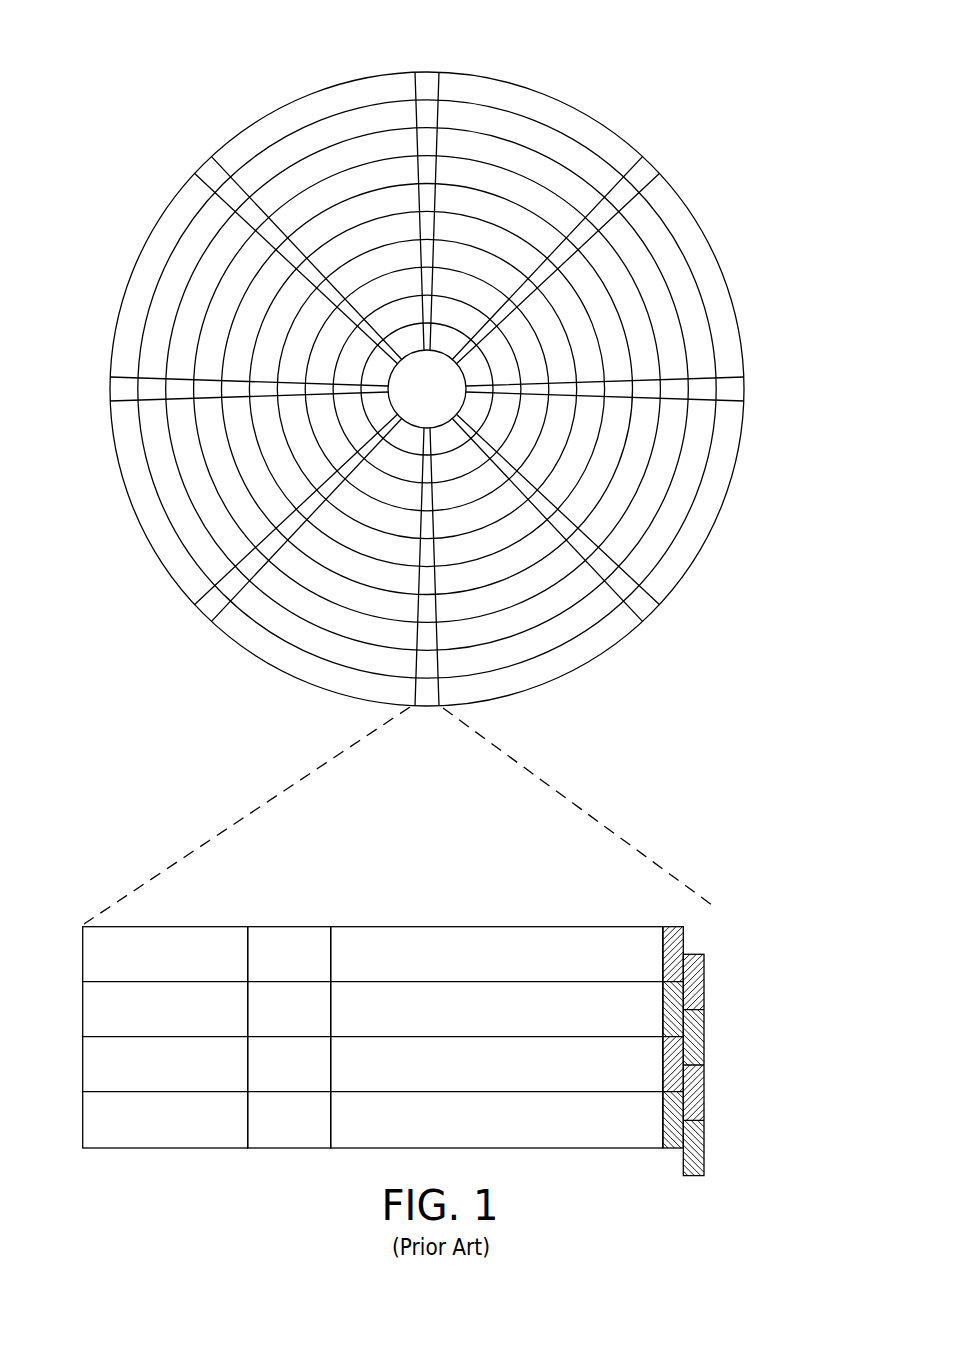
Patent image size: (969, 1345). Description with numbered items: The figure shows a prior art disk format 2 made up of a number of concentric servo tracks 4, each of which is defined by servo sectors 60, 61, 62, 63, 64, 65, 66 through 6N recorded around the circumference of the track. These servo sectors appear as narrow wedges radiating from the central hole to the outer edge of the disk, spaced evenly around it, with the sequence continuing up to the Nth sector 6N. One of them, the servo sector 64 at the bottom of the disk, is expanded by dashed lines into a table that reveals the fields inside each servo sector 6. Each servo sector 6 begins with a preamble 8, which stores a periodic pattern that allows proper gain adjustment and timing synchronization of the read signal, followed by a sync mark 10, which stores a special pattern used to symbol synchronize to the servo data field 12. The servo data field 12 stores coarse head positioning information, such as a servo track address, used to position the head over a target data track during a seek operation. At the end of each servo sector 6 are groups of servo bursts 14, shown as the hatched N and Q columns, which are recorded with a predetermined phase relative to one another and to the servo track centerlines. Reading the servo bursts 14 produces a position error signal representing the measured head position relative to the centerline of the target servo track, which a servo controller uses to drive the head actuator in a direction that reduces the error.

The disk format 2 is at (193, 76).
The servo tracks 4 is at (558, 118).
The servo sector 6 is at (428, 398).
The servo sector 60 is at (428, 82).
The servo sector 61 is at (643, 173).
The servo sector 62 is at (737, 390).
The servo sector 63 is at (643, 605).
The servo sector 64 is at (286, 780).
The servo sector 65 is at (208, 610).
The servo sector 66 is at (117, 388).
The servo sector 6N is at (138, 160).
The preamble 8 is at (172, 926).
The sync mark 10 is at (290, 926).
The servo data field 12 is at (485, 926).
The servo bursts 14 is at (700, 926).